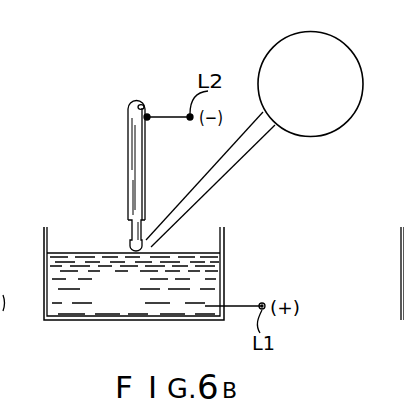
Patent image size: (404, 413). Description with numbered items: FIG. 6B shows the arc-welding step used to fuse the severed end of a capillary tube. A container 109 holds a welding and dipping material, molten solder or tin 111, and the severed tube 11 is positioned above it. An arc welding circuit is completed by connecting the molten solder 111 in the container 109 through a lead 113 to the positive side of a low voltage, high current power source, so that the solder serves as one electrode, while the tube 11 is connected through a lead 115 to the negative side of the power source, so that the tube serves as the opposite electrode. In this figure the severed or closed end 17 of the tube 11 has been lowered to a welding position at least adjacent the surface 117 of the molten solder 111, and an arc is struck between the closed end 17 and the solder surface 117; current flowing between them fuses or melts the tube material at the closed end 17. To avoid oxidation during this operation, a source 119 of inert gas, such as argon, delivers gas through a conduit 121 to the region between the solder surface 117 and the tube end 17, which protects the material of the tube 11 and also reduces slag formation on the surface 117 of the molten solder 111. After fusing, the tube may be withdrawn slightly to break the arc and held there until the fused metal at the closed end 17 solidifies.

The tube 11 is at (128, 136).
The closed end 17 is at (130, 226).
The container 109 is at (152, 320).
The molten solder 111 is at (130, 299).
The lead 113 is at (237, 305).
The lead 115 is at (163, 116).
The surface 117 is at (82, 252).
The source of inert gas 119 is at (354, 55).
The conduit 121 is at (229, 172).